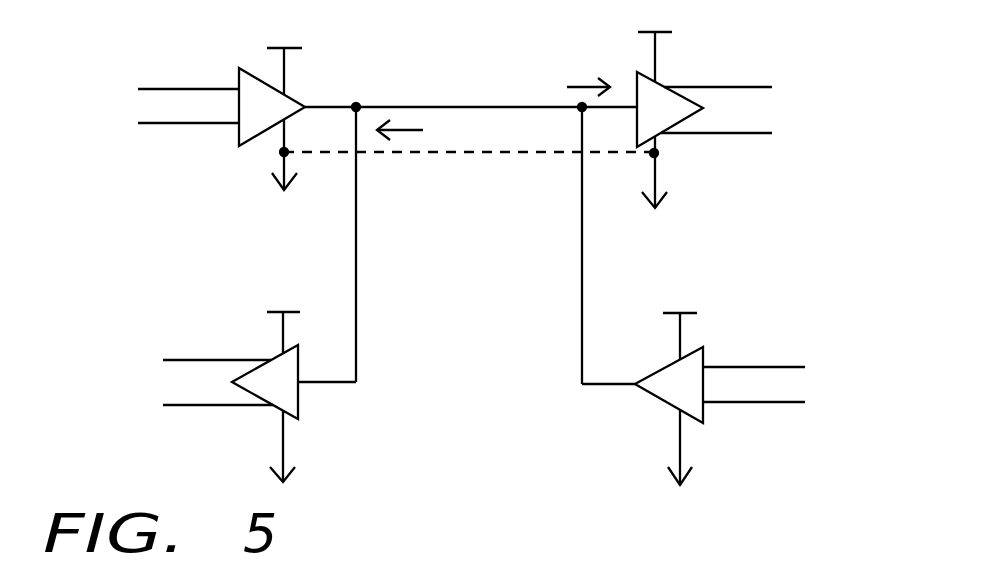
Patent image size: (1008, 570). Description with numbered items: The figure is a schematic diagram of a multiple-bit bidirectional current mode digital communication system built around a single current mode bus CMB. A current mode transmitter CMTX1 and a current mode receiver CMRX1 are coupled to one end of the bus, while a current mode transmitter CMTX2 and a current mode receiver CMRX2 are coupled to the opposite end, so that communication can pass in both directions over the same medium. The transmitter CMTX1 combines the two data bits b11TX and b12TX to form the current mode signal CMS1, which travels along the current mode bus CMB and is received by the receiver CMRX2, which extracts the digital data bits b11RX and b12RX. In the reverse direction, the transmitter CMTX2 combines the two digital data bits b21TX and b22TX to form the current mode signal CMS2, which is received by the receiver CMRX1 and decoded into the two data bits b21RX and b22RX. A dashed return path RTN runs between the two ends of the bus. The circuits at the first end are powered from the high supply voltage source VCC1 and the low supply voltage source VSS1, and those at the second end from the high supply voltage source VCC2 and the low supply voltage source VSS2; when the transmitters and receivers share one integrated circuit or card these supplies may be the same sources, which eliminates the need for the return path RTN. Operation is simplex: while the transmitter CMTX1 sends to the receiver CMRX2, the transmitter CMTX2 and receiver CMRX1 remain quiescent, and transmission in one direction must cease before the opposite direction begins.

The current mode bus CMB is at (417, 107).
The return path RTN is at (459, 152).
The current mode signal CMS1 is at (548, 82).
The current mode signal CMS2 is at (442, 127).
The current mode transmitter CMTX1 is at (316, 119).
The current mode transmitter CMTX2 is at (644, 399).
The current mode receiver CMRX1 is at (243, 397).
The current mode receiver CMRX2 is at (632, 120).
The data bit b11TX is at (138, 85).
The data bit b12TX is at (138, 118).
The digital data bit b11RX is at (768, 85).
The digital data bit b12RX is at (766, 132).
The data bit b21RX is at (164, 357).
The data bit b22RX is at (165, 400).
The digital data bit b21TX is at (805, 365).
The digital data bit b22TX is at (805, 400).
The high supply voltage source VCC1 is at (285, 157).
The high supply voltage source VCC2 is at (670, 156).
The low supply voltage source VSS1 is at (307, 341).
The low supply voltage source VSS2 is at (698, 350).